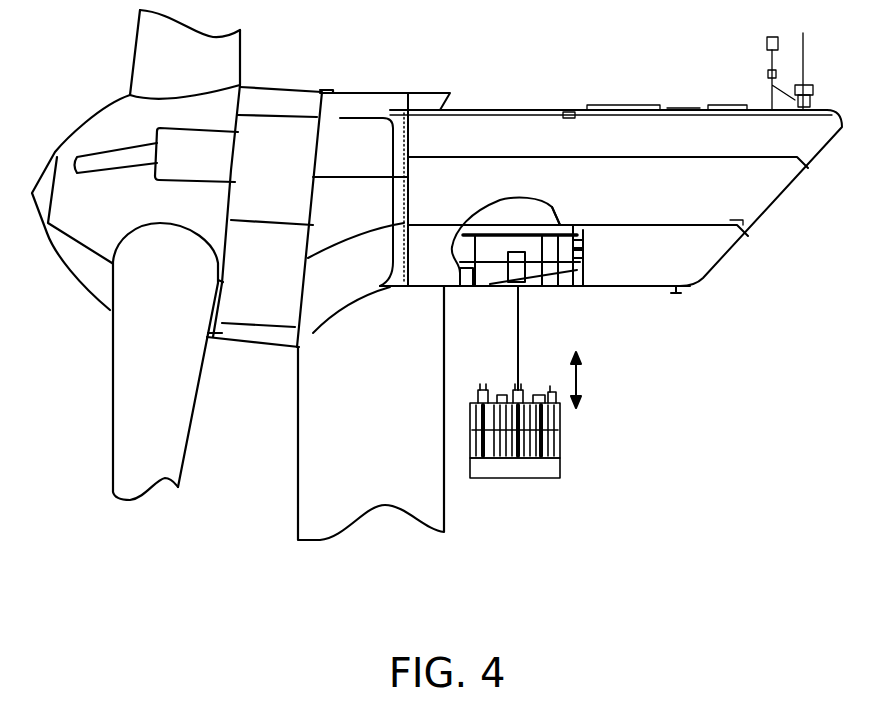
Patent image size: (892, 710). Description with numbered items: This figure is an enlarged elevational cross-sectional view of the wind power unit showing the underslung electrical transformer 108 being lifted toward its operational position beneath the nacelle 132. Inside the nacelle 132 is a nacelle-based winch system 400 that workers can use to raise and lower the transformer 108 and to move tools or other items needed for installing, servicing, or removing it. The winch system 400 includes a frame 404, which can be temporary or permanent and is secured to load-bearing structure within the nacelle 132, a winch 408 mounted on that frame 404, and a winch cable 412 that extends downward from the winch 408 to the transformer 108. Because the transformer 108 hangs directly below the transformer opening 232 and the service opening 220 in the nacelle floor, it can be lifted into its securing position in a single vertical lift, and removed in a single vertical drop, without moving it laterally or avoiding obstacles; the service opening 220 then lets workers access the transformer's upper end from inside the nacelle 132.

The electrical transformer 108 is at (563, 442).
The nacelle 132 is at (515, 108).
The service opening 220 is at (543, 286).
The transformer opening 232 is at (493, 283).
The nacelle-based winch system 400 is at (525, 218).
The frame 404 is at (553, 223).
The winch 408 is at (464, 166).
The winch cable 412 is at (518, 360).